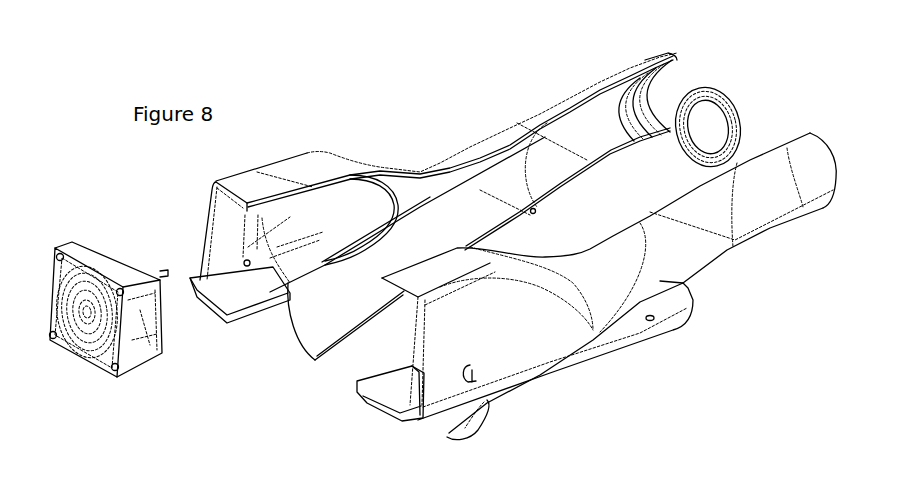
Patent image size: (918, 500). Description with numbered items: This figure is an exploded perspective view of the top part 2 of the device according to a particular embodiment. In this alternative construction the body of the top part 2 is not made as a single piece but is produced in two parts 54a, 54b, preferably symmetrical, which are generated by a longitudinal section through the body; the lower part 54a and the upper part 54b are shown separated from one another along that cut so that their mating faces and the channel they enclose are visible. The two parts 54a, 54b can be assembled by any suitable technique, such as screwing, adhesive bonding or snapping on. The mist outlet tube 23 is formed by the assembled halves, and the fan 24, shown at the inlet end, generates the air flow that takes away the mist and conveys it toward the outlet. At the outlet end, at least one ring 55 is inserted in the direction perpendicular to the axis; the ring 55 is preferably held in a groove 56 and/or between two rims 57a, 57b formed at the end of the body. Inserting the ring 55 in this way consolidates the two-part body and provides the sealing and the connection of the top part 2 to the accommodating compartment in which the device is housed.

The top part 2 is at (430, 119).
The mist outlet tube 23 is at (563, 132).
The fan 24 is at (113, 256).
The first part of the body 54a is at (518, 332).
The second part of the body 54b is at (308, 157).
The ring 55 is at (740, 110).
The groove 56 is at (632, 107).
The first rim 57a is at (620, 97).
The second rim 57b is at (635, 90).